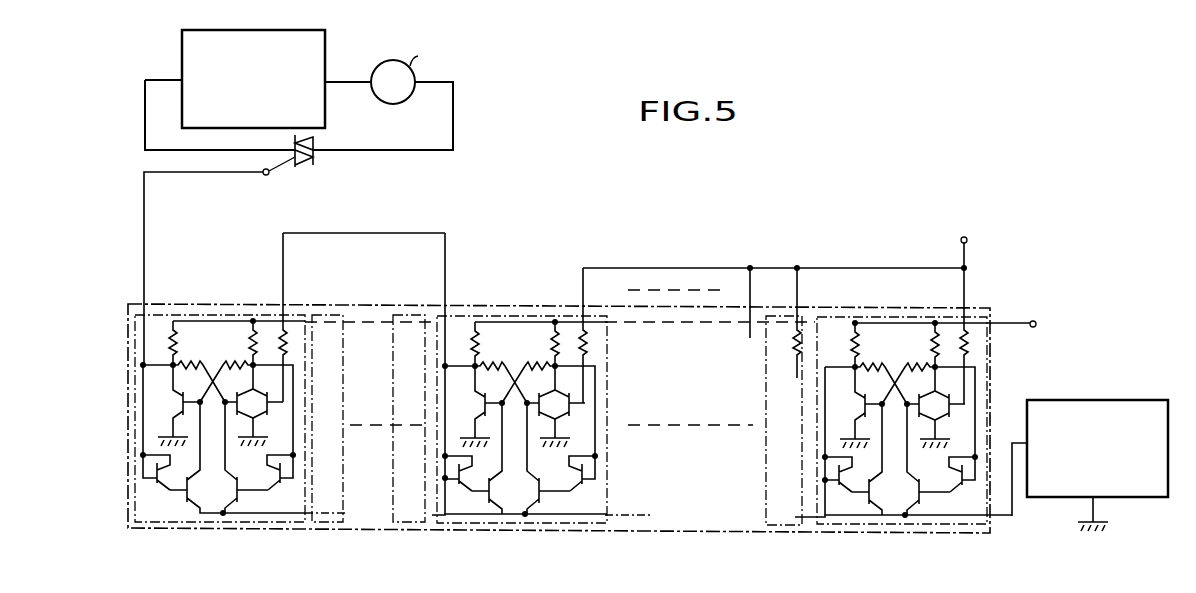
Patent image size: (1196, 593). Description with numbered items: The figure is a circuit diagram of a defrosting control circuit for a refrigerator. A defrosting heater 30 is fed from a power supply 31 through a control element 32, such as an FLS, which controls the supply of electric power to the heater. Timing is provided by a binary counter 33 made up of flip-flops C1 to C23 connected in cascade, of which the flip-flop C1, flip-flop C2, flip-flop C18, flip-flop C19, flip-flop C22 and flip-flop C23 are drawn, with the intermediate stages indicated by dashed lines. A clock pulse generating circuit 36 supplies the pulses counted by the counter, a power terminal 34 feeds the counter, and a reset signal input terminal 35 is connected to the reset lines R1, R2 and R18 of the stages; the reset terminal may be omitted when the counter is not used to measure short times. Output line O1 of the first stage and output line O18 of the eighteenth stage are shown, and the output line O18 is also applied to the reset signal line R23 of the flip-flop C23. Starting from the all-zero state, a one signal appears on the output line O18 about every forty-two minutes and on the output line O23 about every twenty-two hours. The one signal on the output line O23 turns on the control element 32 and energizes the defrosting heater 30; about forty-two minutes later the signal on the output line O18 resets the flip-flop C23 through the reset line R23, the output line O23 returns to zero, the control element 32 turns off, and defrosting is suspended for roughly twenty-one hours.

The defrosting heater 30 is at (326, 63).
The power supply 31 is at (405, 97).
The control element 32 is at (303, 166).
The binary counter 33 is at (700, 528).
The power terminal 34 is at (1036, 326).
The reset signal input terminal 35 is at (967, 240).
The clock pulse generating circuit 36 is at (1067, 400).
The output signal line of the 23rd flip-flop O23 is at (144, 266).
The reset signal line of the 23rd flip-flop R23 is at (284, 249).
The 23rd flip-flop C23 is at (148, 510).
The 22nd flip-flop C22 is at (343, 505).
The 19th flip-flop C19 is at (392, 510).
The output signal line of the 18th flip-flop O18 is at (432, 515).
The 18th flip-flop C18 is at (462, 510).
The reset signal line of the 18th flip-flop R18 is at (584, 274).
The reset signal line of the 2nd flip-flop R2 is at (812, 300).
The 2nd flip-flop C2 is at (775, 512).
The output signal line of the 1st flip-flop O1 is at (803, 518).
The 1st flip-flop C1 is at (840, 512).
The reset signal line of the 1st flip-flop R1 is at (966, 290).